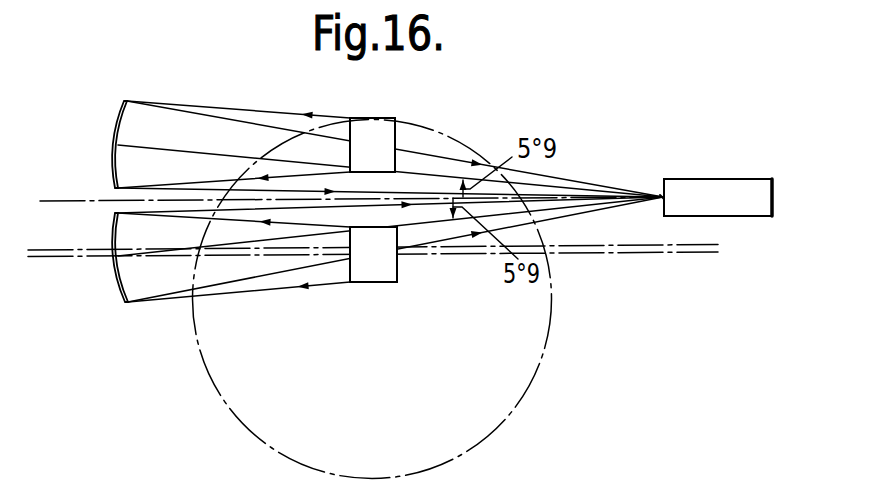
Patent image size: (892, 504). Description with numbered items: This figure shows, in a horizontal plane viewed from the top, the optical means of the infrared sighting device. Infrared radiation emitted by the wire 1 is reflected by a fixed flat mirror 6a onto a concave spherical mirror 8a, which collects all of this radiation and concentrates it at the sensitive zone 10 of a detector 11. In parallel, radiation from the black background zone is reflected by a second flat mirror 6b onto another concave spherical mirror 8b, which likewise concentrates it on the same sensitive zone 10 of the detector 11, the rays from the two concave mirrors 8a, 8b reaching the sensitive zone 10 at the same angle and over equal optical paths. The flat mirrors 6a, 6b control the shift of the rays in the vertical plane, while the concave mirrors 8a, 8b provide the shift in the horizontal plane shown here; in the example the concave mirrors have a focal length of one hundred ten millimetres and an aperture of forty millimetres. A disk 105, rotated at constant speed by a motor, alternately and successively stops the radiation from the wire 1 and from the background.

The wire 1 is at (54, 251).
The concave spherical mirror 8b is at (116, 131).
The concave spherical mirror 8a is at (122, 284).
The flat mirror 6b is at (380, 133).
The flat mirror 6a is at (383, 272).
The sensitive zone 10 is at (661, 194).
The detector 11 is at (710, 192).
The disk 105 is at (533, 378).